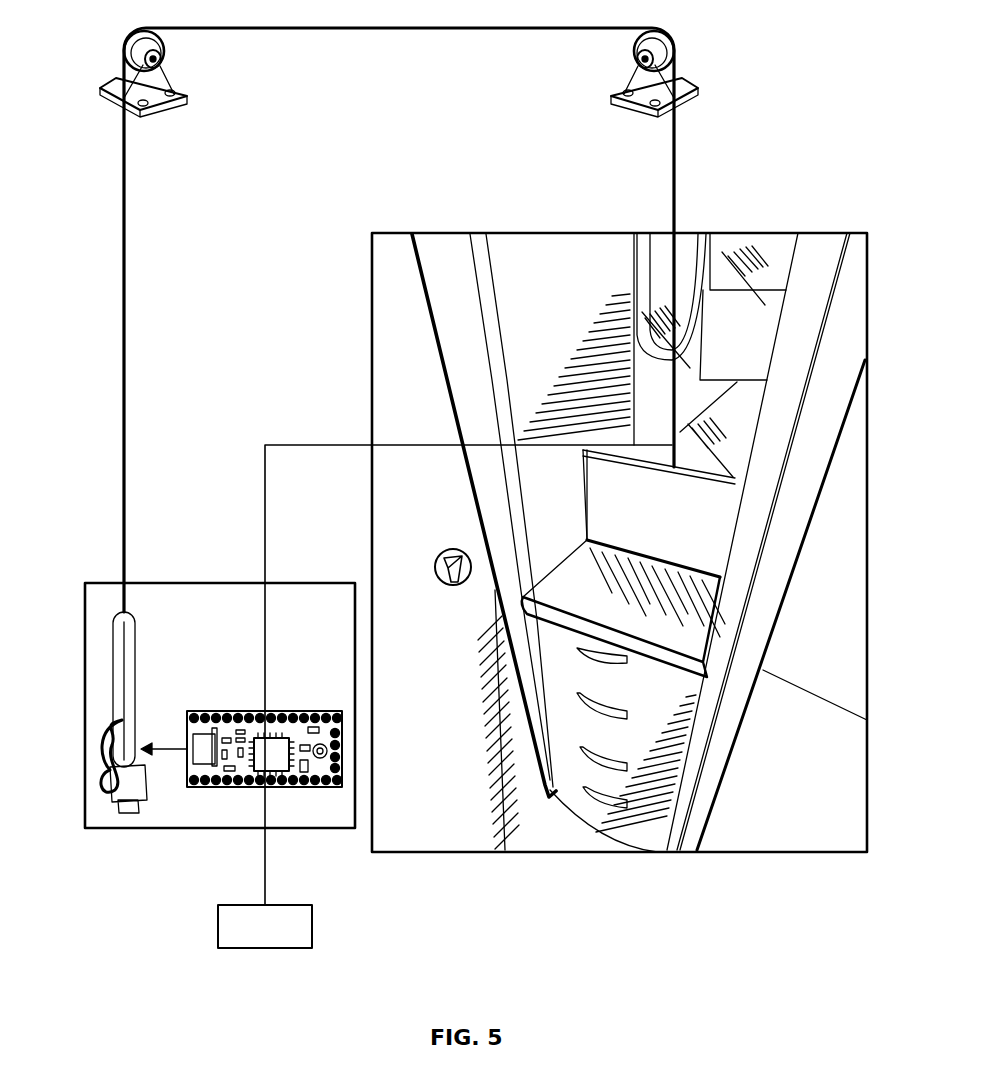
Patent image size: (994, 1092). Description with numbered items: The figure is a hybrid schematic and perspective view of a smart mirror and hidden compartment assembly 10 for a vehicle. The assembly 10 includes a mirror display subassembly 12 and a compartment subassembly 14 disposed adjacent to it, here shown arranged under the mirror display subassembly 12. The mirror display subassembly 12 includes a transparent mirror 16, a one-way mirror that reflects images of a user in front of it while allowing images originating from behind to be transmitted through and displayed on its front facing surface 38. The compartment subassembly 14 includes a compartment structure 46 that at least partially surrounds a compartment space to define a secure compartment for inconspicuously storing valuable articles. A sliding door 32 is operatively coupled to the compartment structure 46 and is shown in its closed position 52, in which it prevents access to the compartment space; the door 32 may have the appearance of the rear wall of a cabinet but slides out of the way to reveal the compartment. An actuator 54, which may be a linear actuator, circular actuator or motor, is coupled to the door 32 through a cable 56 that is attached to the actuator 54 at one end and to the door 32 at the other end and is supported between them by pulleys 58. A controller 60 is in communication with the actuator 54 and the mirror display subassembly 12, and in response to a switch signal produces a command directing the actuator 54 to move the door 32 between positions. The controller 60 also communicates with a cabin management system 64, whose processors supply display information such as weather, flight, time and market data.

The mirror and hidden compartment assembly 10 is at (770, 180).
The mirror display subassembly 12 is at (737, 292).
The compartment subassembly 14 is at (705, 560).
The transparent mirror 16 is at (565, 250).
The door 32 is at (720, 505).
The front facing surface 38 is at (725, 416).
The compartment structure 46 is at (557, 547).
The closed position 52 is at (610, 477).
The actuator 54 is at (98, 694).
The cable 56 is at (397, 27).
The pulleys 58 is at (158, 42).
The controller 60 is at (243, 712).
The cabin management system 64 is at (312, 930).